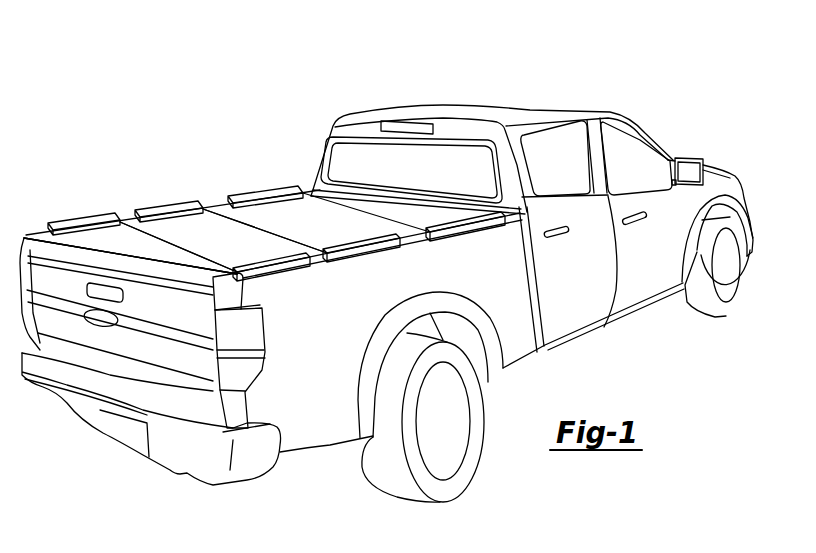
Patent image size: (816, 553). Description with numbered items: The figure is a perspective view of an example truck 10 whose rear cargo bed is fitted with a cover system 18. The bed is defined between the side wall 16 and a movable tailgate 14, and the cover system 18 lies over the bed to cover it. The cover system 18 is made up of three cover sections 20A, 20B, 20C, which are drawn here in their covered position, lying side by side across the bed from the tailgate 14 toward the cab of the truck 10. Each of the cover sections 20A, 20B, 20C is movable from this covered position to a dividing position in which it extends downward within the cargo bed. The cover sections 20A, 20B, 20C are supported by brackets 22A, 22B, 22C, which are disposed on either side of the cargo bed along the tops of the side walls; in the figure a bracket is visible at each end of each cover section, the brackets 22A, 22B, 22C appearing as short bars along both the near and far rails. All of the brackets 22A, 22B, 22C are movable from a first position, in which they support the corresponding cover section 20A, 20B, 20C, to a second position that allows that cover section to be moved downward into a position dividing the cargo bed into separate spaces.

The truck 10 is at (563, 98).
The movable tailgate 14 is at (162, 394).
The side wall 16 is at (309, 397).
The cover system 18 is at (230, 255).
The cover section 20A is at (198, 257).
The cover section 20B is at (292, 239).
The cover section 20C is at (361, 222).
The bracket 22A is at (97, 224).
The bracket 22B is at (180, 207).
The bracket 22C is at (272, 195).